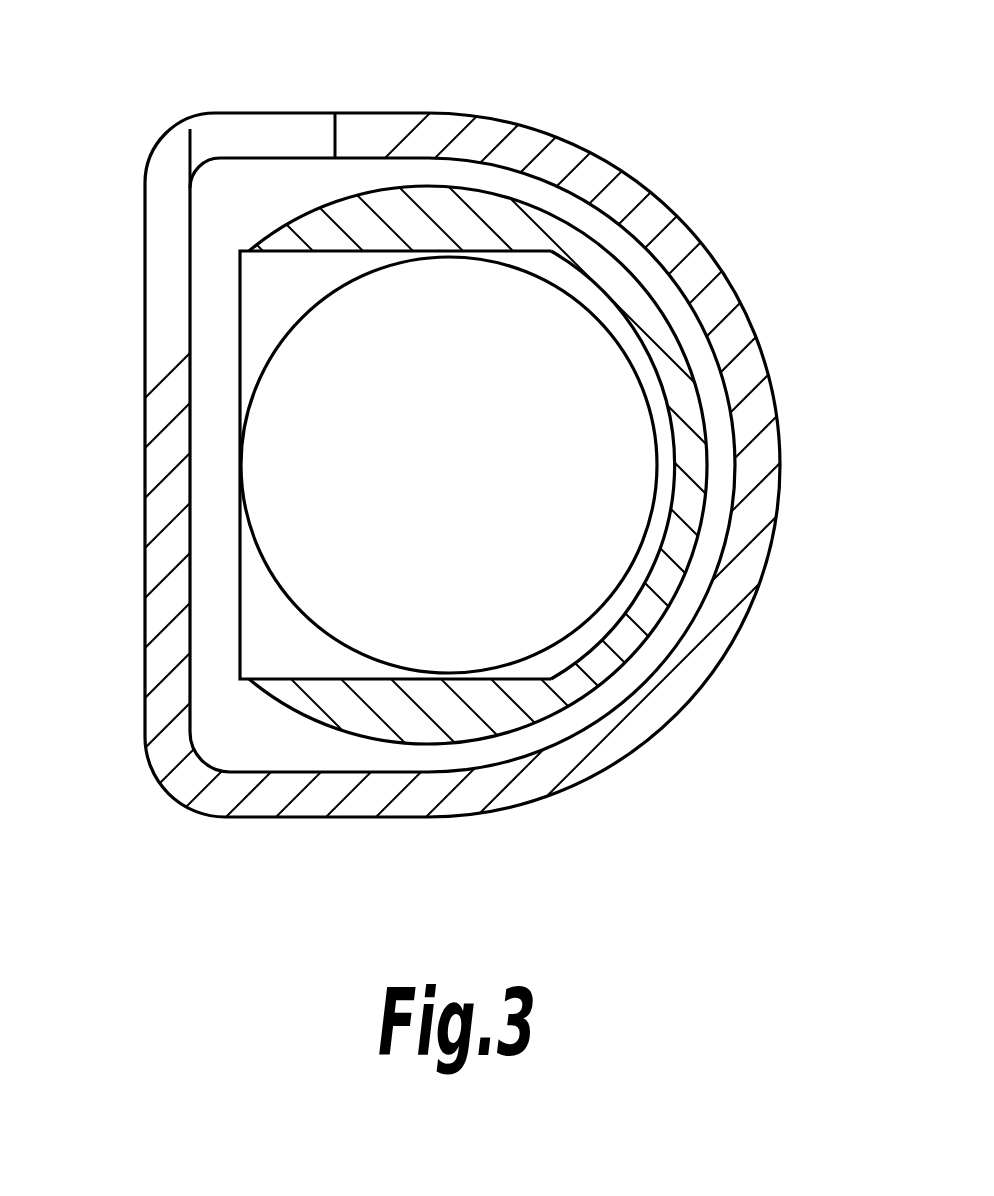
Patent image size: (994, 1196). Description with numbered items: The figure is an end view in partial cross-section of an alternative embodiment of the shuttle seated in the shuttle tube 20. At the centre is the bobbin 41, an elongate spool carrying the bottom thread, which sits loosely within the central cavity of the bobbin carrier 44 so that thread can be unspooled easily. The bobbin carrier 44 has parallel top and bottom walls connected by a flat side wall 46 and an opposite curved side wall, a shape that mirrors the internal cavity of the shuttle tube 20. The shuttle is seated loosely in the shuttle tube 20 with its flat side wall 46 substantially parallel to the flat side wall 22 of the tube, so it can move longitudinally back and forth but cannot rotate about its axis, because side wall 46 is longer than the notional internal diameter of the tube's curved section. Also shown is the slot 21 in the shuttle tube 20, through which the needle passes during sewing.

The shuttle tube 20 is at (758, 470).
The slot 21 is at (262, 135).
The flat side wall 22 is at (145, 340).
The bobbin 41 is at (580, 550).
The bobbin carrier 44 is at (673, 367).
The flat side wall 46 is at (240, 528).